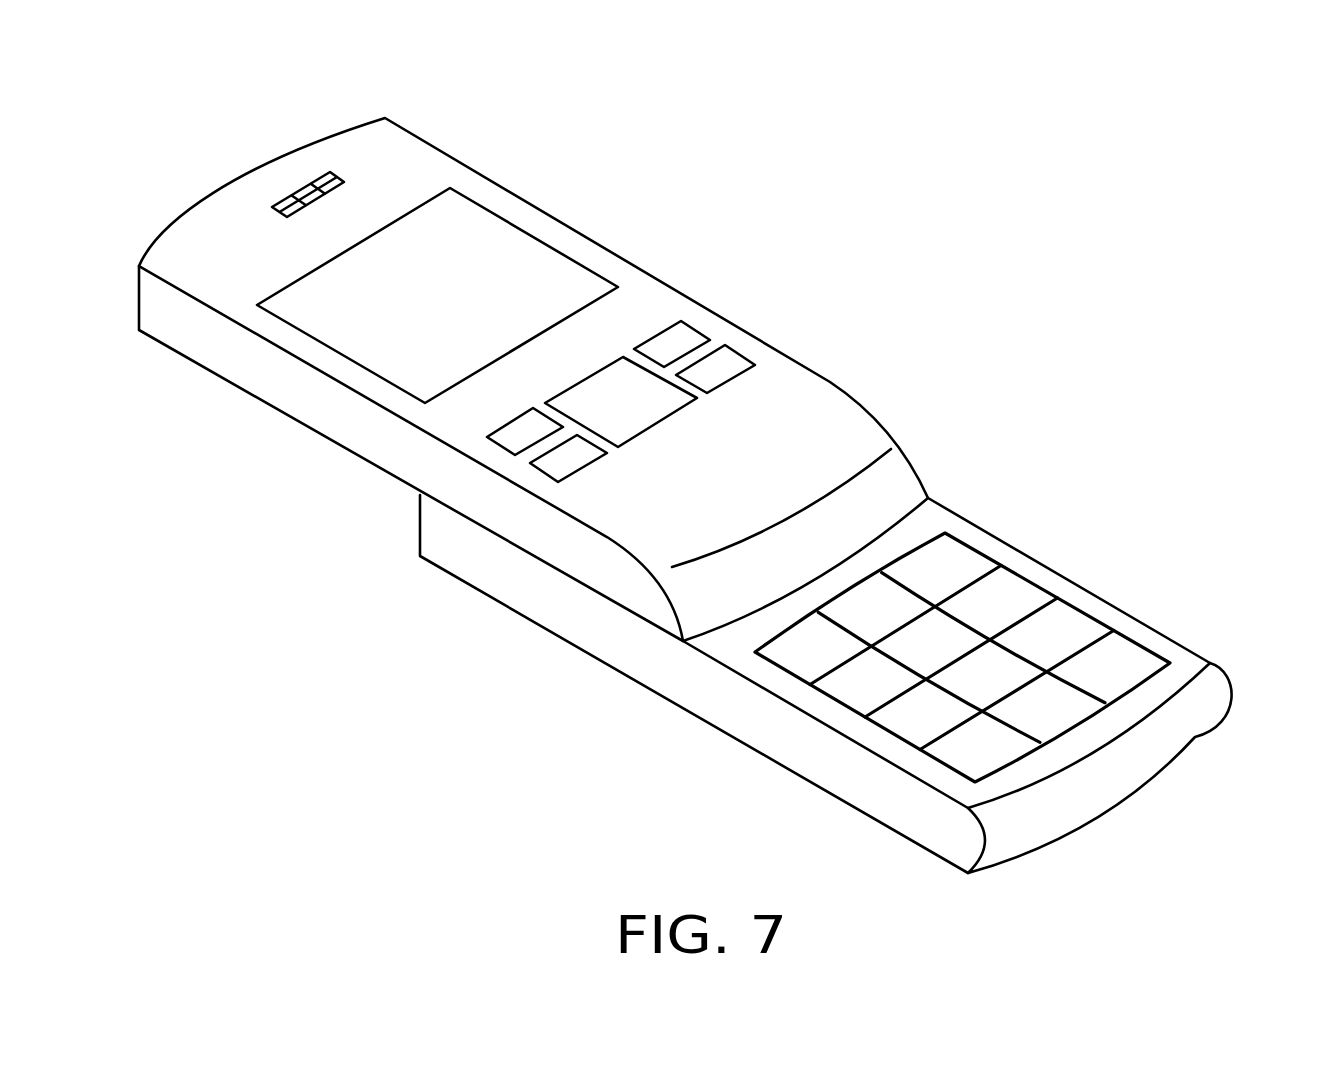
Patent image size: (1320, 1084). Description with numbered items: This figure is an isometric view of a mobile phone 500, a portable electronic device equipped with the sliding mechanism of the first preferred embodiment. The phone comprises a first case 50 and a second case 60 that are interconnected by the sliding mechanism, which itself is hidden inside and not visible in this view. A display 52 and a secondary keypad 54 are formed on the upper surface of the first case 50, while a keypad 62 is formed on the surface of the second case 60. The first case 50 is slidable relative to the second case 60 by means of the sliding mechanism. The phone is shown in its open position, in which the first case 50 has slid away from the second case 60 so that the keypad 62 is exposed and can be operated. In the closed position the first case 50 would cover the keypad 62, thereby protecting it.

The mobile phone 500 is at (705, 80).
The first case 50 is at (813, 399).
The display 52 is at (497, 297).
The secondary keypad 54 is at (717, 372).
The second case 60 is at (1147, 643).
The keypad 62 is at (948, 573).